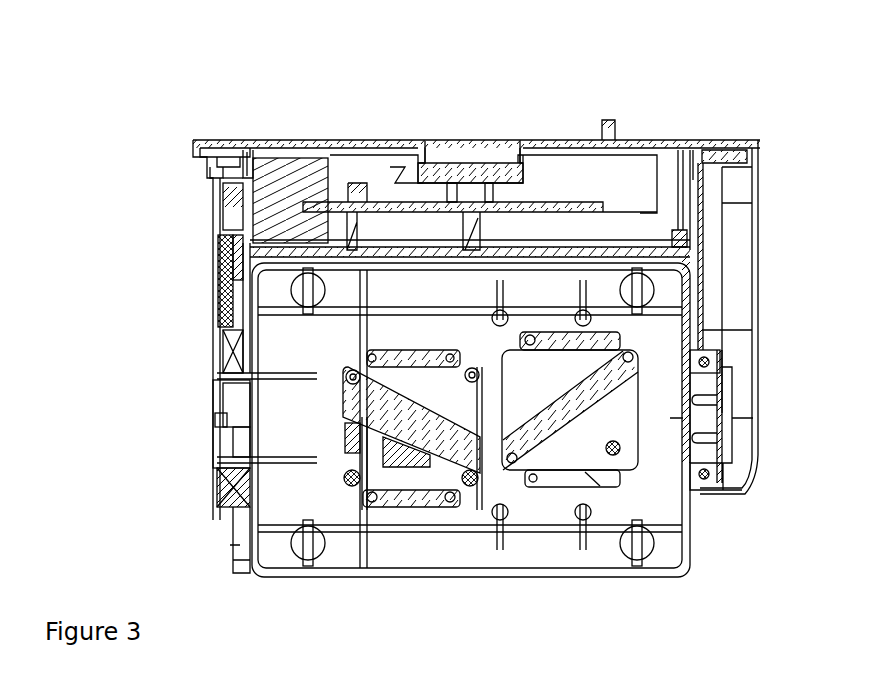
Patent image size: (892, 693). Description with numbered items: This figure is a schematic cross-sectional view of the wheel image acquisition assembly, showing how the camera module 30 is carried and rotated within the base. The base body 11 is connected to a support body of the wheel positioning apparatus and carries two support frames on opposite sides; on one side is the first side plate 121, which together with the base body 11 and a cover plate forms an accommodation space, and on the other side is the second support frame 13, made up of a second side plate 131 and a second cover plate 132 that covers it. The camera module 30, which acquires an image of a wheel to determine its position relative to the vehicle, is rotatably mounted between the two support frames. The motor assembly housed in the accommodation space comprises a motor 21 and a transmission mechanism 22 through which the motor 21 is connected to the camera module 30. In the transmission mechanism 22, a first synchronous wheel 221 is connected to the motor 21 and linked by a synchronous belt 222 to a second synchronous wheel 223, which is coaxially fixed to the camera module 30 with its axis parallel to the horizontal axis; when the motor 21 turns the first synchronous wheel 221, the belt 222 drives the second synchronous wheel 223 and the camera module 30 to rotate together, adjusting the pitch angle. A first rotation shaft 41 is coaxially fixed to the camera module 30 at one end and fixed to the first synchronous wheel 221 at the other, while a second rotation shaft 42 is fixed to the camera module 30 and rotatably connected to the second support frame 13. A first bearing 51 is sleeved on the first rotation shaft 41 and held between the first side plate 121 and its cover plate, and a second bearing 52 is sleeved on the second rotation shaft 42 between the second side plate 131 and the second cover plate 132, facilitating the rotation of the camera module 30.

The base body 11 is at (452, 182).
The first side plate 121 is at (249, 176).
The second support frame 13 is at (780, 96).
The second side plate 131 is at (699, 166).
The second cover plate 132 is at (760, 176).
The motor 21 is at (221, 183).
The transmission mechanism 22 is at (127, 207).
The first synchronous wheel 221 is at (226, 201).
The synchronous belt 222 is at (223, 266).
The second synchronous wheel 223 is at (223, 340).
The first rotation shaft 41 is at (222, 459).
The first bearing 51 is at (224, 496).
The second bearing 52 is at (714, 360).
The second rotation shaft 42 is at (712, 481).
The camera module 30 is at (512, 508).